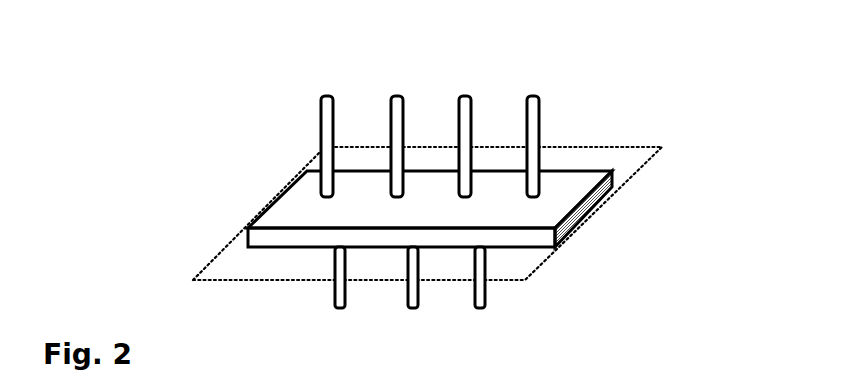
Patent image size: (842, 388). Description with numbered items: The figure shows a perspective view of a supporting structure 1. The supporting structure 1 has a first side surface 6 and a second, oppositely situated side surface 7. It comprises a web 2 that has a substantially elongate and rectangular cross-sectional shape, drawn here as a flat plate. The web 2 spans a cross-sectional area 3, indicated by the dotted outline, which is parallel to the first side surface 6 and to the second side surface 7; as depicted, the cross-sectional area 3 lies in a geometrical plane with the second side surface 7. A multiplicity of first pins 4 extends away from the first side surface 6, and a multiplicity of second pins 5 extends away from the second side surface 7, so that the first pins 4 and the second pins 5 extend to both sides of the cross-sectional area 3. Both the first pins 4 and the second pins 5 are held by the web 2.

The supporting structure 1 is at (661, 91).
The web 2 is at (278, 208).
The cross-sectional area 3 is at (537, 268).
The first pins 4 is at (400, 97).
The second pins 5 is at (330, 302).
The first side surface 6 is at (563, 197).
The second side surface 7 is at (270, 248).